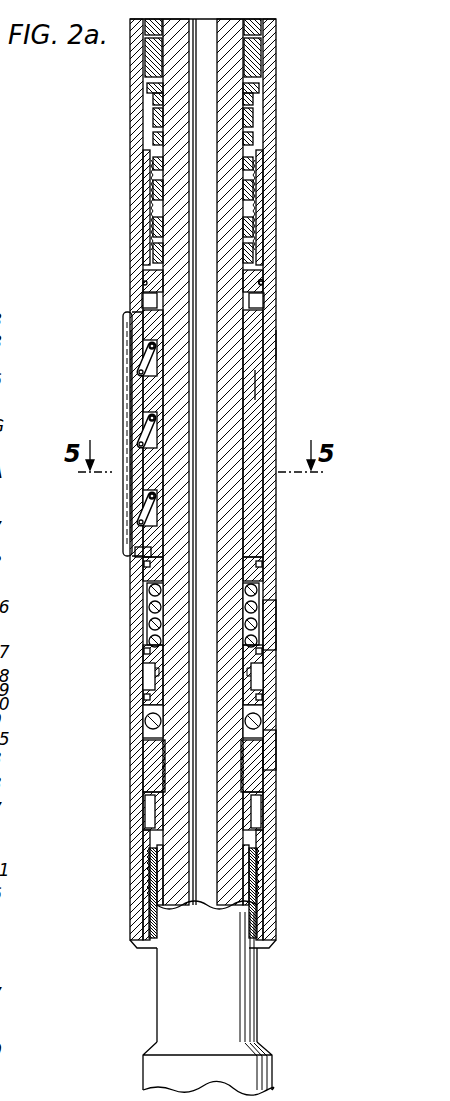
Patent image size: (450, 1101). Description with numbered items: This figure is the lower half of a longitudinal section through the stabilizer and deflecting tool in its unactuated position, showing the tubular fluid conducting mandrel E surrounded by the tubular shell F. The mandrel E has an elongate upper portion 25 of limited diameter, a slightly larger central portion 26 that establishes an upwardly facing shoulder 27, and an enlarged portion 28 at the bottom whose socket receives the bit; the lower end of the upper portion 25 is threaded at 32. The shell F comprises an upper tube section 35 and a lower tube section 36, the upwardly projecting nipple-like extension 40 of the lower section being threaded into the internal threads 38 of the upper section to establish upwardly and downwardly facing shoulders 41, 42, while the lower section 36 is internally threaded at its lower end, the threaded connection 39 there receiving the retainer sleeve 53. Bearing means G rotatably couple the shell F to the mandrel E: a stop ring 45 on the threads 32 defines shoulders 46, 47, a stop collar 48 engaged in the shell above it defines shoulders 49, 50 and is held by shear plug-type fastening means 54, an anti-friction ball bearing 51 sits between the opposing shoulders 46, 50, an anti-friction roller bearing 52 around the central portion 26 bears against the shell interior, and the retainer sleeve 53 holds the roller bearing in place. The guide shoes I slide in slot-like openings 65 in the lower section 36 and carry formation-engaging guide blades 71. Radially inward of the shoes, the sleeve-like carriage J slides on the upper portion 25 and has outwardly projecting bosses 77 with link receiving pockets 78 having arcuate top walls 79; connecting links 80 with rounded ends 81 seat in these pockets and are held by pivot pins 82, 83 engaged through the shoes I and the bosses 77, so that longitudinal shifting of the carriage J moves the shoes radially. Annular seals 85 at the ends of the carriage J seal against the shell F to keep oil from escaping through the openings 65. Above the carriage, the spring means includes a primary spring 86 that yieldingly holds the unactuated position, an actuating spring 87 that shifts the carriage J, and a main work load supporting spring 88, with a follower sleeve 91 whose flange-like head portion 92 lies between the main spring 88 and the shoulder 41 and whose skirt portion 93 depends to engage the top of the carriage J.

The upper portion of the mandrel 25 is at (233, 308).
The central portion of the mandrel 26 is at (233, 976).
The upwardly facing shoulder 27 is at (258, 777).
The enlarged portion of the mandrel 28 is at (248, 1072).
The threads 32 is at (270, 752).
The upper tube section 35 is at (268, 90).
The lower tube section 36 is at (271, 624).
The internal threads 38 is at (256, 206).
The threaded connection 39 is at (265, 855).
The nipple-like extension 40 is at (256, 224).
The upwardly facing shoulder 41 is at (257, 168).
The downwardly facing shoulder 42 is at (264, 281).
The stop ring 45 is at (152, 764).
The upwardly facing shoulder 46 is at (261, 724).
The downwardly facing shoulder 47 is at (262, 797).
The stop collar 48 is at (260, 649).
The upwardly facing shoulder 49 is at (149, 646).
The downwardly facing shoulder 50 is at (147, 722).
The anti-friction ball bearing 51 is at (260, 698).
The anti-friction roller bearing 52 is at (261, 812).
The retainer sleeve 53 is at (258, 898).
The shear plug-type fastening means 54 is at (263, 676).
The slot-like openings 65 is at (143, 560).
The guide blade 71 is at (128, 402).
The bosses 77 is at (148, 392).
The link receiving pockets 78 is at (150, 442).
The arcuate top walls 79 is at (150, 418).
The connecting links 80 is at (148, 518).
The rounded ends 81 is at (152, 497).
The pivot pin 82 is at (133, 368).
The pivot pin 83 is at (152, 347).
The annular seals 85 is at (144, 283).
The primary spring 86 is at (260, 600).
The actuating spring 87 is at (250, 118).
The main work load supporting spring 88 is at (252, 38).
The follower sleeve 91 is at (143, 172).
The head portion 92 is at (258, 152).
The skirt portion 93 is at (258, 190).
The mandrel E is at (167, 992).
The shell F is at (272, 346).
The bearing means G is at (146, 716).
The guide shoes I is at (128, 524).
The carriage J is at (255, 390).